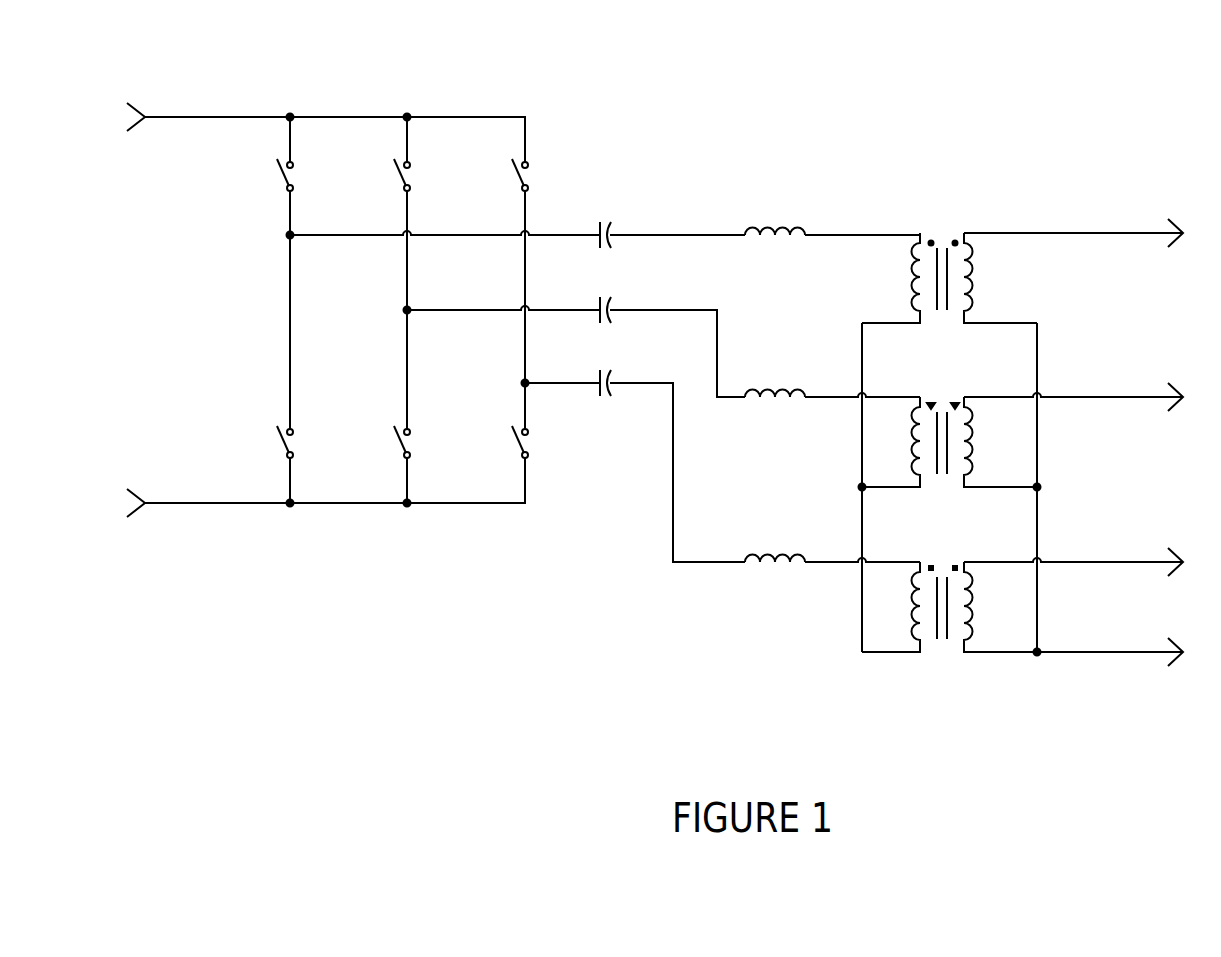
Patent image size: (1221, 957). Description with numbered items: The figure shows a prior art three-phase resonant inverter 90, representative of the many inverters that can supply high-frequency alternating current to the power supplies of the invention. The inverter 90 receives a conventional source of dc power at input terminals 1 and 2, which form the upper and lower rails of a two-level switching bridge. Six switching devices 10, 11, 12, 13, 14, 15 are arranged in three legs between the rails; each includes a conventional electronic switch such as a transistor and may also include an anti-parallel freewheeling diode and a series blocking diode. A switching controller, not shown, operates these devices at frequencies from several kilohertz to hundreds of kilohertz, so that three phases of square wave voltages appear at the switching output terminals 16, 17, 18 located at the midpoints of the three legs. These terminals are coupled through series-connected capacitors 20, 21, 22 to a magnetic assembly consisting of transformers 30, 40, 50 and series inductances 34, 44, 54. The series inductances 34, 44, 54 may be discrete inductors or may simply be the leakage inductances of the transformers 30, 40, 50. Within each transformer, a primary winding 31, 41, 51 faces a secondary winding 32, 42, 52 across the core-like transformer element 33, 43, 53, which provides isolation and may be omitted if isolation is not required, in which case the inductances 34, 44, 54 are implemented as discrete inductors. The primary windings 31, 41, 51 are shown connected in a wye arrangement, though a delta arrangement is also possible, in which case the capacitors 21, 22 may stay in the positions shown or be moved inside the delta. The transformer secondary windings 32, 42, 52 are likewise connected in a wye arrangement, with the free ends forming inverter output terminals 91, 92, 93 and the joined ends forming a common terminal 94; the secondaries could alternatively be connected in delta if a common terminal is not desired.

The input terminal 1 is at (147, 115).
The input terminal 2 is at (148, 502).
The switching device 10 is at (282, 173).
The switching device 11 is at (282, 440).
The switching device 12 is at (399, 173).
The switching device 13 is at (399, 440).
The switching device 14 is at (517, 172).
The switching device 15 is at (517, 440).
The switching output terminal 16 is at (288, 235).
The switching output terminal 17 is at (405, 310).
The switching output terminal 18 is at (523, 383).
The series-connected capacitor 20 is at (593, 226).
The series-connected capacitor 21 is at (593, 301).
The series-connected capacitor 22 is at (593, 374).
The transformer 30 is at (949, 274).
The primary winding of transformer 30 31 is at (918, 282).
The transformer secondary winding 32 is at (966, 282).
The transformer 33 is at (940, 248).
The series inductance 34 is at (788, 228).
The transformer 40 is at (949, 440).
The primary winding of transformer 40 41 is at (918, 446).
The transformer secondary winding 42 is at (966, 446).
The transformer 43 is at (940, 410).
The series inductance 44 is at (788, 390).
The transformer 50 is at (949, 606).
The primary winding of transformer 50 51 is at (918, 611).
The transformer secondary winding 52 is at (966, 611).
The transformer 53 is at (940, 575).
The series inductance 54 is at (788, 555).
The three-phase resonant inverter 90 is at (648, 615).
The inverter output terminal 91 is at (1140, 233).
The inverter output terminal 92 is at (1140, 397).
The inverter output terminal 93 is at (1140, 562).
The common terminal 94 is at (1140, 652).